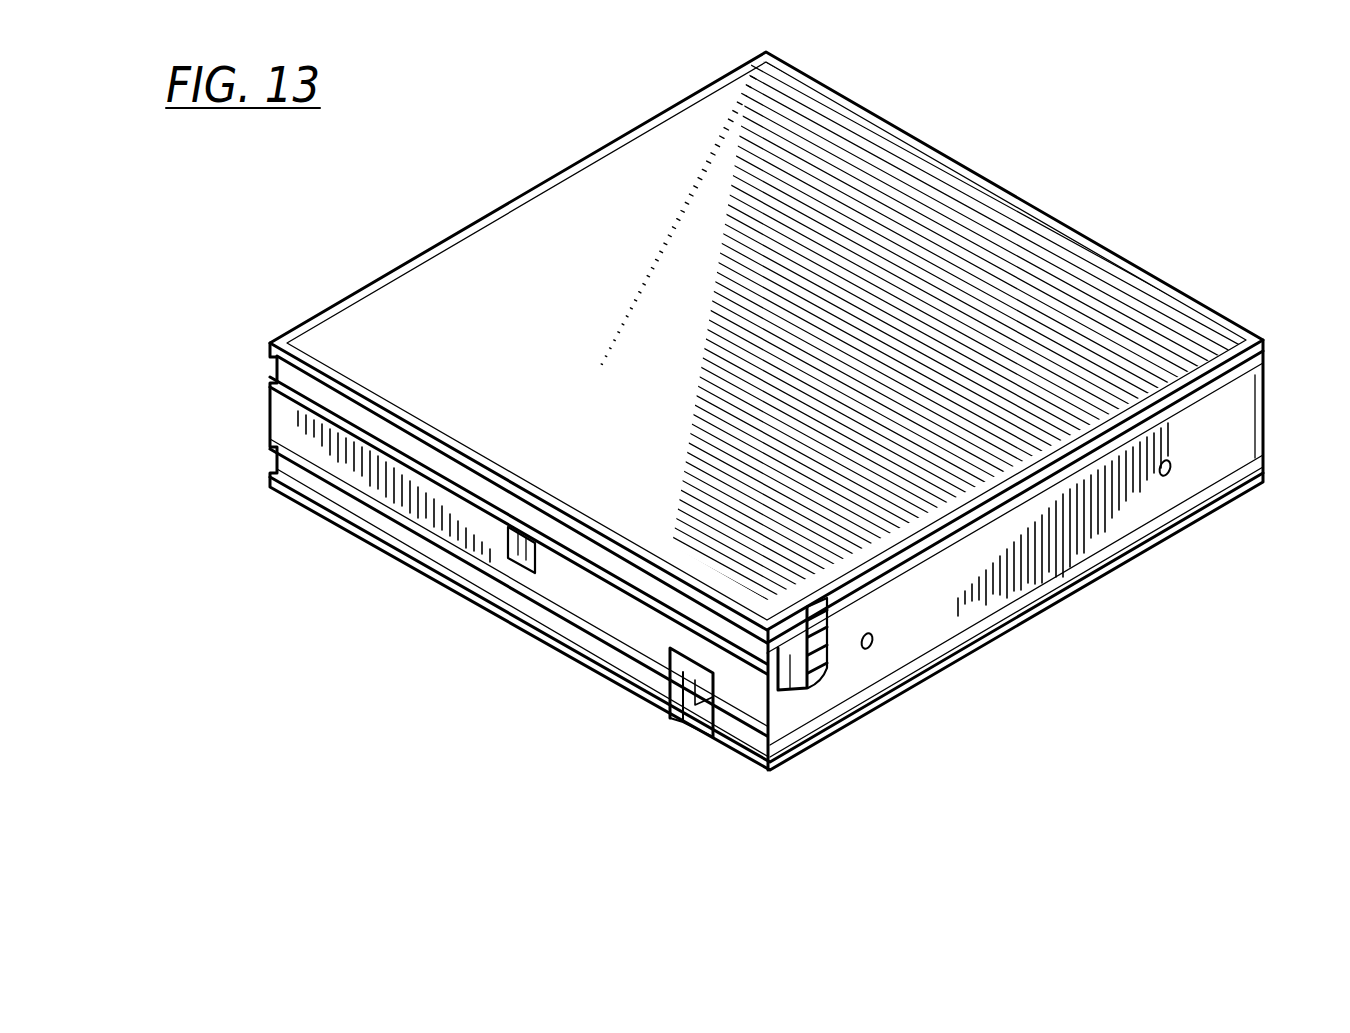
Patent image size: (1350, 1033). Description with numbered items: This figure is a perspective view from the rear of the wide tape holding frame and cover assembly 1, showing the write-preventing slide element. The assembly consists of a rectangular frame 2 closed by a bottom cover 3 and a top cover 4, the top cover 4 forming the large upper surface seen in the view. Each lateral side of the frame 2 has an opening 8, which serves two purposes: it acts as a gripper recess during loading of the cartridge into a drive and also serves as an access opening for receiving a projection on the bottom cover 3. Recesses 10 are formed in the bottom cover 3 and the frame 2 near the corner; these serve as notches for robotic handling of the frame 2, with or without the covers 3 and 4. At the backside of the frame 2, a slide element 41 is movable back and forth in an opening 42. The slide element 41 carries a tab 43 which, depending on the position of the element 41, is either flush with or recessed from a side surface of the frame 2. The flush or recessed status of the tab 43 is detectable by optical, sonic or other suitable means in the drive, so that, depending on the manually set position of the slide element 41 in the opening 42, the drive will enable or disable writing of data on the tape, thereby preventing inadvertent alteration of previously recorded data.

The wide tape holding frame and cover assembly 1 is at (1066, 136).
The rectangular frame 2 is at (1233, 412).
The bottom cover 3 is at (1042, 608).
The top cover 4 is at (528, 226).
The opening 8 is at (508, 558).
The recess 10 is at (690, 697).
The slide element 41 is at (790, 685).
The opening 42 is at (827, 654).
The tab 43 is at (763, 646).